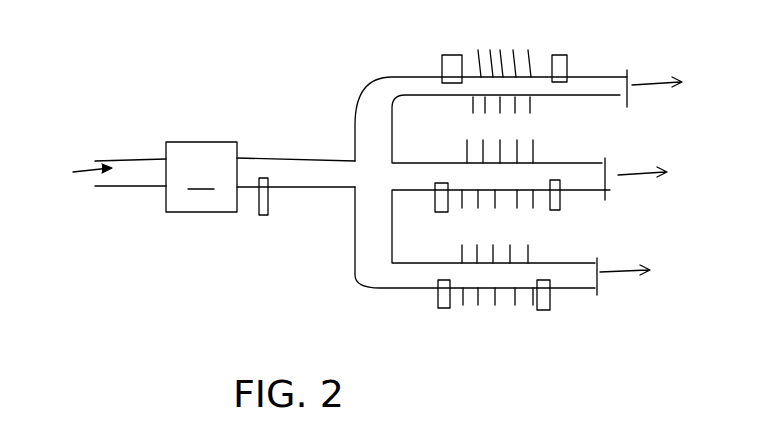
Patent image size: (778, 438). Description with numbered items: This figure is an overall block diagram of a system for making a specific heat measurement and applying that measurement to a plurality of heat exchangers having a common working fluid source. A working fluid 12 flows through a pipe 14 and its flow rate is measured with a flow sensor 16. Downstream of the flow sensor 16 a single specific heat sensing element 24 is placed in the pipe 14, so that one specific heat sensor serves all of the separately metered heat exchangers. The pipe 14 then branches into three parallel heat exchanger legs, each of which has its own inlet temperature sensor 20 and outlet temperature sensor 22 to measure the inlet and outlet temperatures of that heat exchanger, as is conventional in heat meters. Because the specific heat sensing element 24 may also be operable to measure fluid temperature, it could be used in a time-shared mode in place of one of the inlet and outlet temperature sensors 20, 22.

The working fluid 12 is at (76, 170).
The pipe 14 is at (120, 187).
The flow sensor 16 is at (201, 177).
The inlet temperature sensor 20 is at (446, 72).
The outlet temperature sensor 22 is at (568, 62).
The specific heat sensing element 24 is at (268, 202).